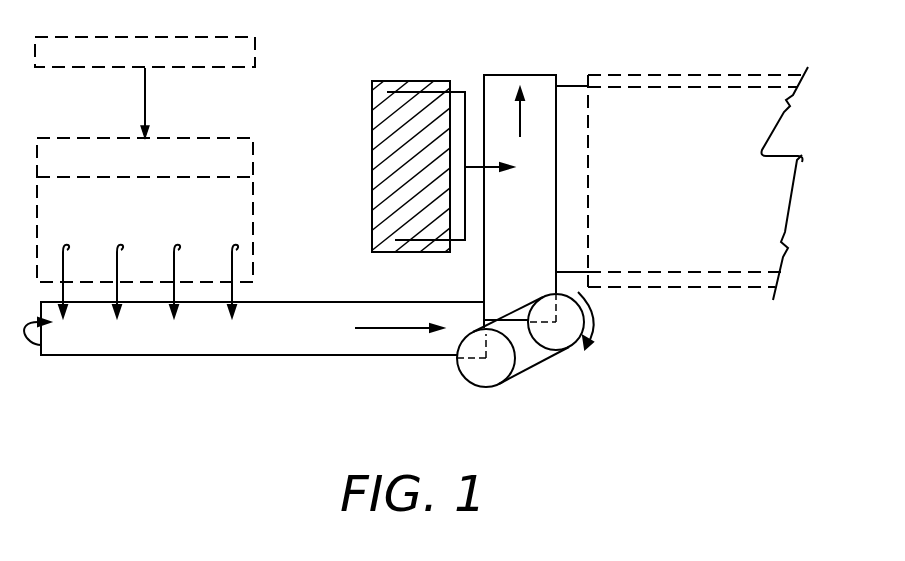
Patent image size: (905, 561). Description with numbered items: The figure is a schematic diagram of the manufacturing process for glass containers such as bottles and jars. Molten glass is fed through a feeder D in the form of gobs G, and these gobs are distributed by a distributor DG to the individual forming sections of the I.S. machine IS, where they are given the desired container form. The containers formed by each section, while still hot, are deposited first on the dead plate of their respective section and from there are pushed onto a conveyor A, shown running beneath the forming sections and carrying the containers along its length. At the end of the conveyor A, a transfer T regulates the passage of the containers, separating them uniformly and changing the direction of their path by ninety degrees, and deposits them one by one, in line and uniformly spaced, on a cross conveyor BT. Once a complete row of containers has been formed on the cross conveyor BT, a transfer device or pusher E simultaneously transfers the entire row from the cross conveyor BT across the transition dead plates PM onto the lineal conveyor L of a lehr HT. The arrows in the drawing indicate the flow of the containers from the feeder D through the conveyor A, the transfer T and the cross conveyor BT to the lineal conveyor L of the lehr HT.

The feeder D is at (145, 52).
The gobs G is at (158, 103).
The distributor DG is at (145, 210).
The I.S. machine IS is at (148, 266).
The conveyor A is at (254, 328).
The transfer device or pusher E is at (411, 74).
The cross conveyor BT is at (540, 75).
The transition dead plates PM is at (579, 76).
The lehr HT is at (786, 126).
The lineal conveyor L is at (766, 209).
The transfer T is at (541, 387).